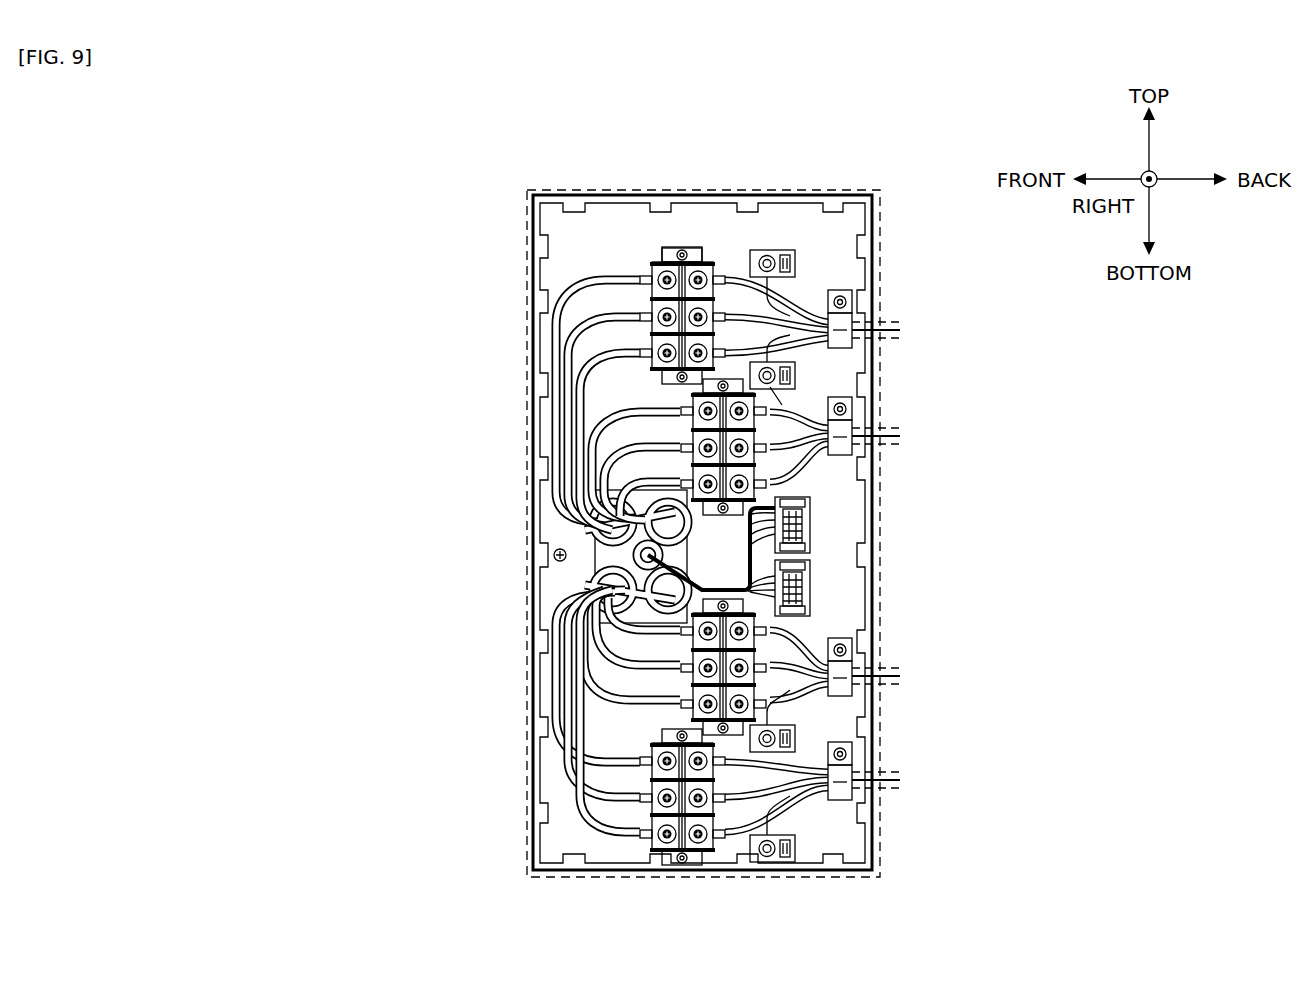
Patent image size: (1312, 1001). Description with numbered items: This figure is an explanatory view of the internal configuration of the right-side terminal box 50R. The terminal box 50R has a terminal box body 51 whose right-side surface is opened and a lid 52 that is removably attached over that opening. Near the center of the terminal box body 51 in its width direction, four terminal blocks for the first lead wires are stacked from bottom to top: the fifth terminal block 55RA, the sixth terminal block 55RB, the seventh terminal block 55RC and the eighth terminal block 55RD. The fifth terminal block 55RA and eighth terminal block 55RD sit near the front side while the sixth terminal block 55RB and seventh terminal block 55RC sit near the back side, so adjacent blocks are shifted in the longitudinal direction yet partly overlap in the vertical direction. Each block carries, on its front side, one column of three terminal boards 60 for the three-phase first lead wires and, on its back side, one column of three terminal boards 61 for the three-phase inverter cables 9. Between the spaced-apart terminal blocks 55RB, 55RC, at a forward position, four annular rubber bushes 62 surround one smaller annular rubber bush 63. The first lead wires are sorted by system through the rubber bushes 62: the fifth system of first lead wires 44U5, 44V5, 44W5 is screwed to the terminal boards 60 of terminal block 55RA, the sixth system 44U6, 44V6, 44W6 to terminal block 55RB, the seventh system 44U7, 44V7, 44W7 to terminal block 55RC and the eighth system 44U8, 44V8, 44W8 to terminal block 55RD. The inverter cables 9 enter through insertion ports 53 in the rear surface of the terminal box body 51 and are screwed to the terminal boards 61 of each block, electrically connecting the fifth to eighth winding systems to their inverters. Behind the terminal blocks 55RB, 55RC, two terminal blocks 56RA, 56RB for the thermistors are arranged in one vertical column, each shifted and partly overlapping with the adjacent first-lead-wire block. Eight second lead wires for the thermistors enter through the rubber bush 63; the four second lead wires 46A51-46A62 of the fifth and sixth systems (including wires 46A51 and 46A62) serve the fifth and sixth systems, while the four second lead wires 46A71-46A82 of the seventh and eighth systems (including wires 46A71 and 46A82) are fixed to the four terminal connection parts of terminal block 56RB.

The terminal box 50R is at (752, 485).
The terminal box body 51 is at (795, 195).
The lid 52 is at (880, 240).
The insertion ports 53 is at (858, 318).
The inverter cable 9 is at (860, 352).
The eighth terminal block 55RD is at (696, 265).
The seventh terminal block 55RC is at (684, 398).
The sixth terminal block 55RB is at (684, 716).
The fifth terminal block 55RA is at (700, 866).
The terminal boards 60 is at (663, 262).
The terminal boards 61 is at (703, 244).
The rubber bush 62 is at (570, 507).
The rubber bush 63 is at (553, 556).
The first lead wire 44U8 is at (560, 301).
The first lead wire 44V8 is at (572, 328).
The first lead wire 44W8 is at (582, 362).
The first lead wire 44U7 is at (575, 425).
The first lead wire 44V7 is at (585, 455).
The first lead wire 44W7 is at (585, 488).
The first lead wire 44U6 is at (550, 603).
The first lead wire 44V6 is at (565, 652).
The first lead wire 44W6 is at (578, 684).
The first lead wire 44U5 is at (567, 752).
The first lead wire 44V5 is at (580, 787).
The first lead wire 44W5 is at (590, 817).
The terminal block 56RB is at (812, 505).
The terminal block 56RA is at (812, 626).
The second lead wires 46A71-46A82 is at (881, 549).
The second lead wire 46A71 is at (711, 549).
The second lead wire 46A82 is at (762, 529).
The second lead wires 46A51-46A62 is at (917, 591).
The second lead wire 46A51 is at (760, 583).
The second lead wire 46A62 is at (761, 593).